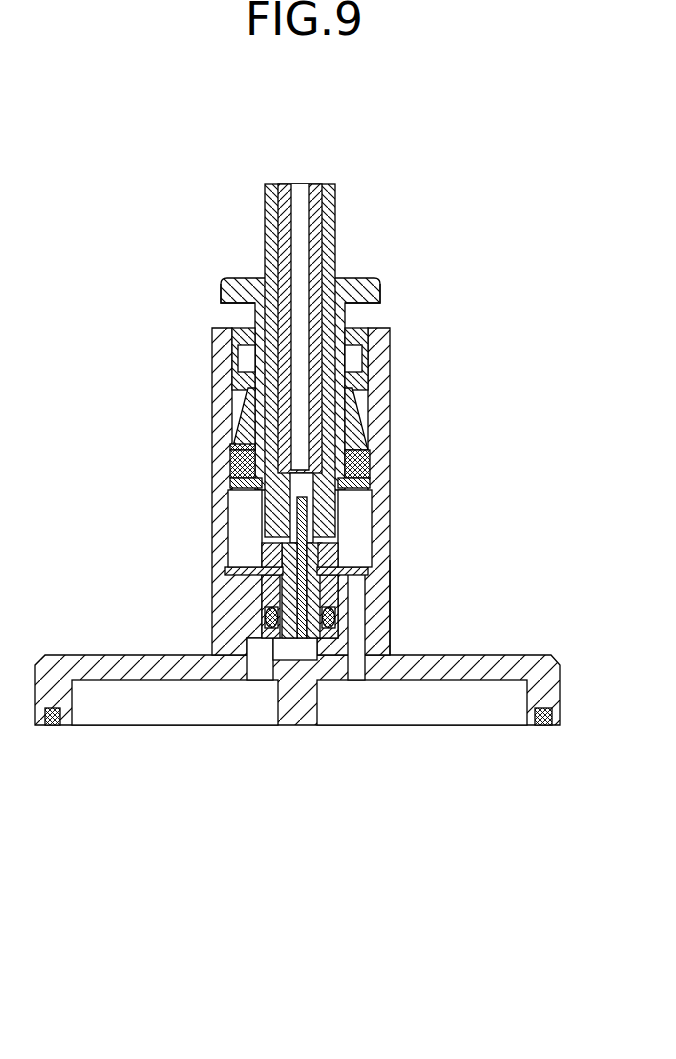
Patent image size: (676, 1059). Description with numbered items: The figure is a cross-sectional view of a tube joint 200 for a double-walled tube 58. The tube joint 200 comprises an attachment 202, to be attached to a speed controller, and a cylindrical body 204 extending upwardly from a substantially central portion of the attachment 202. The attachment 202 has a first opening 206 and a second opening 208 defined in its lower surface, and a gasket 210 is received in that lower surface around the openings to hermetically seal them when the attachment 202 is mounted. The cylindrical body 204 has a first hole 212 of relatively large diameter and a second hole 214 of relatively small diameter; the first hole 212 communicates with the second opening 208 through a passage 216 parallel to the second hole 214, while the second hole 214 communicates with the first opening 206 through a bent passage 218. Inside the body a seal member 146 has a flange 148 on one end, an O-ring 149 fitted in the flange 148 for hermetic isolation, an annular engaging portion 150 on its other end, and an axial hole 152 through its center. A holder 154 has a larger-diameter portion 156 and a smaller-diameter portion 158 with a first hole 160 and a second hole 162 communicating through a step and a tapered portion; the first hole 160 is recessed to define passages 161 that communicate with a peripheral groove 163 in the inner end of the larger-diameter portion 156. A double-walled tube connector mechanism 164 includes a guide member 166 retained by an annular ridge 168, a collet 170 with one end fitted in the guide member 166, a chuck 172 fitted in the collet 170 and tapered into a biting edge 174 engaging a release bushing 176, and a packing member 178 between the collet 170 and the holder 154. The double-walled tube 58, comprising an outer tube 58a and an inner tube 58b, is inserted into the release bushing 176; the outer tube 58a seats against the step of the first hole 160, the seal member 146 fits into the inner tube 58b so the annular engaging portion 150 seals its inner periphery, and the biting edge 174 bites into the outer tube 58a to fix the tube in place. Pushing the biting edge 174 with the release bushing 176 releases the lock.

The double-walled tube 58 is at (253, 320).
The outer tube 58a is at (270, 200).
The inner tube 58b is at (287, 190).
The double-walled tube connector mechanism 164 is at (372, 245).
The release bushing 176 is at (230, 293).
The guide member 166 is at (352, 330).
The annular ridge 168 is at (368, 362).
The collet 170 is at (366, 385).
The chuck 172 is at (233, 396).
The tube joint 200 is at (537, 402).
The first hole 212 is at (368, 432).
The biting edge 174 is at (240, 436).
The packing member 178 is at (238, 470).
The annular engaging portion 150 is at (366, 460).
The larger-diameter portion 156 is at (240, 494).
The axial hole 152 is at (362, 493).
The peripheral groove 163 is at (240, 520).
The holder 154 is at (372, 504).
The second hole 162 is at (240, 545).
The first hole 160 is at (366, 526).
The smaller-diameter portion 158 is at (240, 573).
The passages 161 is at (363, 546).
The seal member 146 is at (240, 583).
The cylindrical body 204 is at (391, 578).
The flange 148 is at (248, 590).
The second hole 214 is at (334, 588).
The attachment 202 is at (516, 636).
The bent passage 218 is at (258, 652).
The passage 216 is at (358, 621).
The gasket 210 is at (58, 726).
The first opening 206 is at (162, 712).
The O-ring 149 is at (273, 642).
The second opening 208 is at (444, 712).